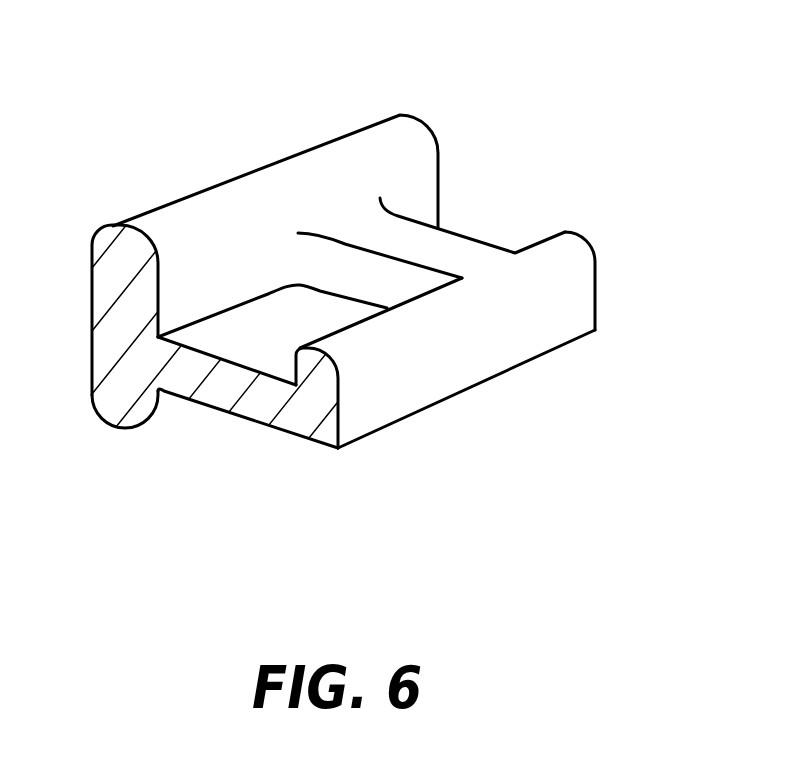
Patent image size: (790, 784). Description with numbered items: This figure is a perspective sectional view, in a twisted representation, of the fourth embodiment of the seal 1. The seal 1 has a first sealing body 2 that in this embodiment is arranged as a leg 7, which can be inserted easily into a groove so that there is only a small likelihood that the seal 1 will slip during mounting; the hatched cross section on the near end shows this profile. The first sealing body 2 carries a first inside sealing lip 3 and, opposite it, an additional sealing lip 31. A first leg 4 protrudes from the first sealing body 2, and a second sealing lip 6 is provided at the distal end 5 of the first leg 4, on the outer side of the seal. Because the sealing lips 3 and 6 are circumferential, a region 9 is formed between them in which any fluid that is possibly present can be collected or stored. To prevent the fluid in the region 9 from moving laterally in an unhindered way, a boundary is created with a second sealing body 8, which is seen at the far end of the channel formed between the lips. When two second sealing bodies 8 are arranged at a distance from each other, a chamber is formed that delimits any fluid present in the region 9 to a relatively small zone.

The seal 1 is at (636, 71).
The first sealing body 2 is at (103, 363).
The first inside sealing lip 3 is at (113, 228).
The additional sealing lip 31 is at (124, 430).
The first leg 4 is at (235, 395).
The distal end 5 is at (320, 463).
The second sealing lip 6 is at (347, 344).
The leg 7 is at (123, 302).
The second sealing body 8 is at (461, 248).
The region 9 is at (276, 310).